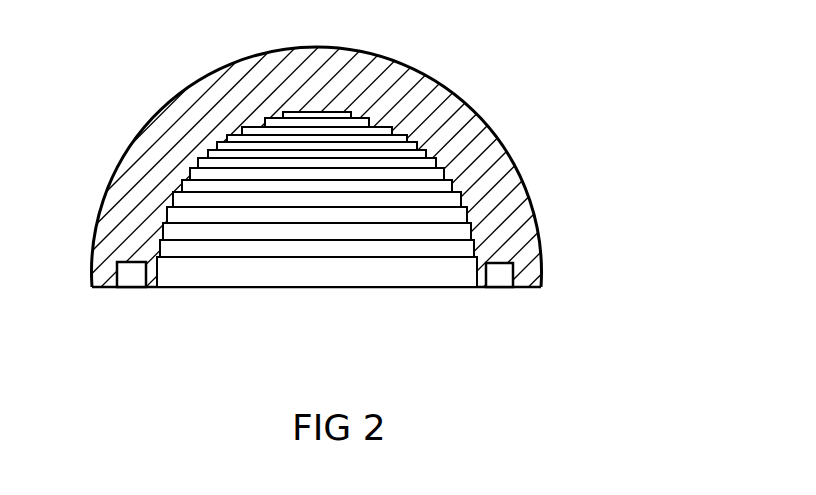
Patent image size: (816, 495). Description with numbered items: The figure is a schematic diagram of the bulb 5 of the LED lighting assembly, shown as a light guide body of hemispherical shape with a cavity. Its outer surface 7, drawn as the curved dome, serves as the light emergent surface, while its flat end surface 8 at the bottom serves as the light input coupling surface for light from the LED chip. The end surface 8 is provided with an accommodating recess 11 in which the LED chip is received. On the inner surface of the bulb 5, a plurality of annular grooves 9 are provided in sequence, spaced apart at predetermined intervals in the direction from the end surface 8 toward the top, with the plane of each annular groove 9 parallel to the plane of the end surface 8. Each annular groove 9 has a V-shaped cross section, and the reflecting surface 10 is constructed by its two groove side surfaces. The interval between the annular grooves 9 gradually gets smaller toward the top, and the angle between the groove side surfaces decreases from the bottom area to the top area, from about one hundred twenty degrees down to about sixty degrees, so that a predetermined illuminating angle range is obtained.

The bulb 5 is at (141, 94).
The outer surface 7 is at (531, 190).
The end surface 8 is at (527, 290).
The annular grooves 9 is at (423, 149).
The reflecting surface 10 is at (397, 116).
The accommodating recess 11 is at (502, 273).